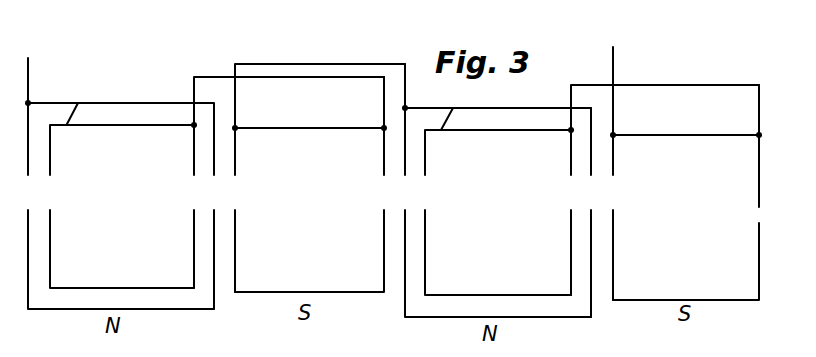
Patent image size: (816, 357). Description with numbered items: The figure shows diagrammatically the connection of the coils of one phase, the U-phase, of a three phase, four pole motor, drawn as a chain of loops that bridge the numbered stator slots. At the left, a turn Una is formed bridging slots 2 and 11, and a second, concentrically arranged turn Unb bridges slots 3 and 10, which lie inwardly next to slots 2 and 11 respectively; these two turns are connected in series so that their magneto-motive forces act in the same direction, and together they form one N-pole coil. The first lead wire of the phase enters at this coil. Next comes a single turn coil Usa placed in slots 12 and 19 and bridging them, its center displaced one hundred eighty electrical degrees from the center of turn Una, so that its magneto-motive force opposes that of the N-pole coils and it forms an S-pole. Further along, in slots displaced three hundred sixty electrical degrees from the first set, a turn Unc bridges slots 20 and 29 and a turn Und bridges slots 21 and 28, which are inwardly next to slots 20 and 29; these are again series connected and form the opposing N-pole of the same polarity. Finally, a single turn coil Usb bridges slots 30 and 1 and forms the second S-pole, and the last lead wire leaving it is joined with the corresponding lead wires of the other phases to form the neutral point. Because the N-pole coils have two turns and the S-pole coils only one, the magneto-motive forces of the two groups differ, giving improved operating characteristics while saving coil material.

The slot 1 is at (688, 192).
The slot 2 is at (116, 174).
The slot 3 is at (118, 195).
The slot 10 is at (280, 182).
The slot 11 is at (125, 206).
The slot 12 is at (315, 178).
The slot 19 is at (313, 184).
The slot 20 is at (491, 190).
The slot 21 is at (493, 212).
The slot 28 is at (657, 190).
The slot 29 is at (591, 212).
The slot 30 is at (682, 165).